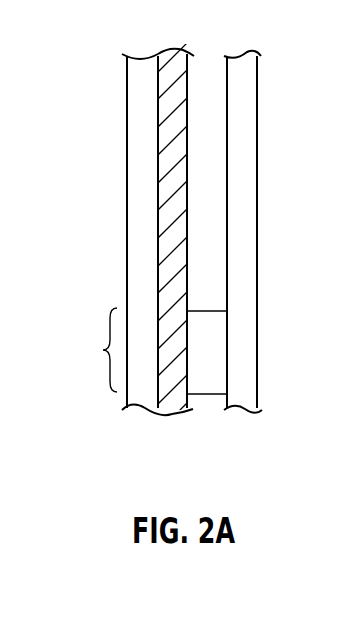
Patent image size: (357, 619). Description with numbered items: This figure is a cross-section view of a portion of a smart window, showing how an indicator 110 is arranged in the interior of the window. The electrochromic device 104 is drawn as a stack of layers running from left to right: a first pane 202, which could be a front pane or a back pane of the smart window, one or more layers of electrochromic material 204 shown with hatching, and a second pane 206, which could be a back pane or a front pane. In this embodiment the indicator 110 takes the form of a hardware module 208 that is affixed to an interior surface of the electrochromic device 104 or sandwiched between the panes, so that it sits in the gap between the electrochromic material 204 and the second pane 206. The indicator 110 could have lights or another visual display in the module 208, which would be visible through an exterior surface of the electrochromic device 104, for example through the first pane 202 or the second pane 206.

The electrochromic device 104 is at (188, 243).
The indicator 110 is at (88, 350).
The first pane 202 is at (146, 245).
The layers of electrochromic material 204 is at (167, 133).
The second pane 206 is at (245, 118).
The hardware module 208 is at (197, 368).